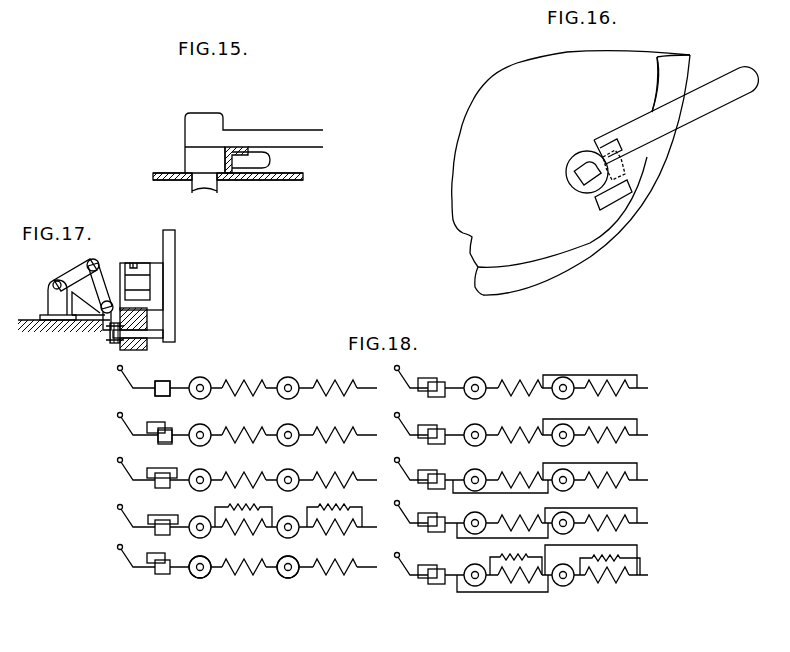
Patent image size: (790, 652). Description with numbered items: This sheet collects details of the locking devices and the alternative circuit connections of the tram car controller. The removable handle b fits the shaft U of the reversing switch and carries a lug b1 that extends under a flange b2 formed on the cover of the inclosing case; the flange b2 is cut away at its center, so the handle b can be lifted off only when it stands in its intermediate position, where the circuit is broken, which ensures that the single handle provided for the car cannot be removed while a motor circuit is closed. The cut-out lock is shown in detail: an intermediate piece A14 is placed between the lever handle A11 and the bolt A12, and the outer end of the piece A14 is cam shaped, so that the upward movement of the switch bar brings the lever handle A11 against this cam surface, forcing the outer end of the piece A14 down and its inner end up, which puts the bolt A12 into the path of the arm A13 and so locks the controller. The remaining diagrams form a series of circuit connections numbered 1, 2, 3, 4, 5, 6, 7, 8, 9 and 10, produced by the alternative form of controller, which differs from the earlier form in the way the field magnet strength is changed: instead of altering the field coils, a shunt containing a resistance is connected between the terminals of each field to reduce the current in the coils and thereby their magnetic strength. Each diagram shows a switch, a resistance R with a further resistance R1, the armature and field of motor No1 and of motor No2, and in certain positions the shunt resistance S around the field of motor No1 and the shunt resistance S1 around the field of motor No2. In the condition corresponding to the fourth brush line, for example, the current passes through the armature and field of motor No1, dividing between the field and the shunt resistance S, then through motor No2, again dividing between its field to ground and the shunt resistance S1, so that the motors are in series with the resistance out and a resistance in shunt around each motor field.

In FIG. 15, the handle b is at (296, 135).
In FIG. 16, the handle b is at (726, 86).
In FIG. 15, the flange b2 is at (240, 152).
In FIG. 16, the flange b2 is at (626, 190).
In FIG. 15, the lug b1 is at (254, 160).
In FIG. 15, the shaft U is at (202, 193).
In FIG. 16, the shaft U is at (583, 174).
In FIG. 17, the lever handle A11 is at (96, 264).
In FIG. 17, the arm A13 is at (158, 323).
In FIG. 17, the bolt A12 is at (152, 342).
In FIG. 17, the intermediate piece A14 is at (107, 333).
In FIG. 18, the circuit connection at first controller position 1 is at (241, 383).
In FIG. 18, the circuit connection at second controller position 2 is at (240, 431).
In FIG. 18, the circuit connection at third controller position 3 is at (240, 473).
In FIG. 18, the circuit connection at fourth controller position 4 is at (239, 519).
In FIG. 18, the circuit connection at fifth controller position 5 is at (172, 577).
In FIG. 18, the circuit connection at sixth controller position 6 is at (424, 397).
In FIG. 18, the circuit connection at seventh controller position 7 is at (424, 444).
In FIG. 18, the circuit connection at eighth controller position 8 is at (440, 476).
In FIG. 18, the circuit connection at ninth controller position 9 is at (529, 520).
In FIG. 18, the circuit connection at tenth controller position 10 is at (532, 568).
In FIG. 18, the resistance R is at (156, 394).
In FIG. 18, the resistance R1 is at (170, 392).
In FIG. 18, the shunt resistance S is at (378, 533).
In FIG. 18, the shunt resistance S1 is at (645, 552).
In FIG. 18, the motor No. 1 No1 is at (354, 581).
In FIG. 18, the motor No. 2 No2 is at (449, 581).